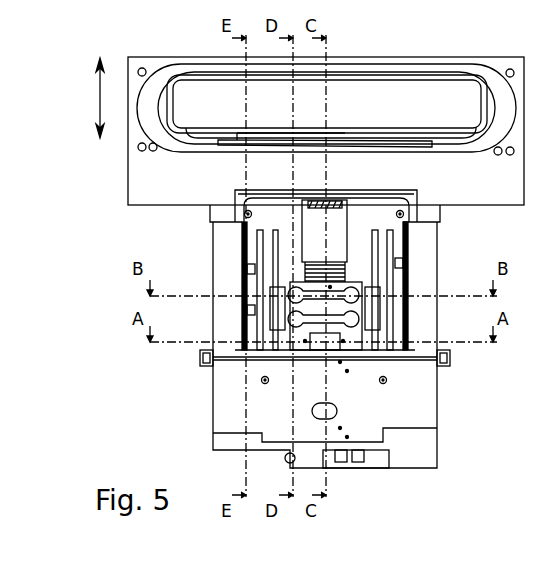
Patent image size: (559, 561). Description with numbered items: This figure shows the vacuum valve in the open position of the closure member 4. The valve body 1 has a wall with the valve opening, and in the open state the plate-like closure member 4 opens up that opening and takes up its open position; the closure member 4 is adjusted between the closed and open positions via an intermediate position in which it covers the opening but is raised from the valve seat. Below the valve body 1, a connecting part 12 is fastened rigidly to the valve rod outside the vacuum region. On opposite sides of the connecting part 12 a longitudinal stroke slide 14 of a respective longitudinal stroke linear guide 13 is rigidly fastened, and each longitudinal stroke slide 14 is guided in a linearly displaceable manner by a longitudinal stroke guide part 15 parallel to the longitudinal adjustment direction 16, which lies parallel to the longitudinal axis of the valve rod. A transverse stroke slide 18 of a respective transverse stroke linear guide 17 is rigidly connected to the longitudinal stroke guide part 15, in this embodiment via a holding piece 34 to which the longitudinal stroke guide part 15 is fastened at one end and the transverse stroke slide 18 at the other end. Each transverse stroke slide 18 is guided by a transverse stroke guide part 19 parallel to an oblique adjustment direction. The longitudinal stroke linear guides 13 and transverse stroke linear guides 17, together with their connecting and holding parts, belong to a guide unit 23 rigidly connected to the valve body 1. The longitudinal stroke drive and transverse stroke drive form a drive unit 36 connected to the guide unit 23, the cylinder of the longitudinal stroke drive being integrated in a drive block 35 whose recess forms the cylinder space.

The valve body 1 is at (152, 176).
The closure member 4 is at (352, 143).
The connecting part 12 is at (236, 358).
The longitudinal stroke linear guide 13 is at (240, 313).
The longitudinal stroke slide 14 is at (447, 360).
The longitudinal stroke guide part 15 is at (408, 236).
The longitudinal adjustment direction 16 is at (100, 97).
The transverse stroke linear guide 17 is at (412, 262).
The transverse stroke slide 18 is at (247, 270).
The transverse stroke guide part 19 is at (242, 240).
The guide unit 23 is at (197, 275).
The holding piece 34 is at (390, 250).
The drive block 35 is at (418, 418).
The drive unit 36 is at (445, 412).